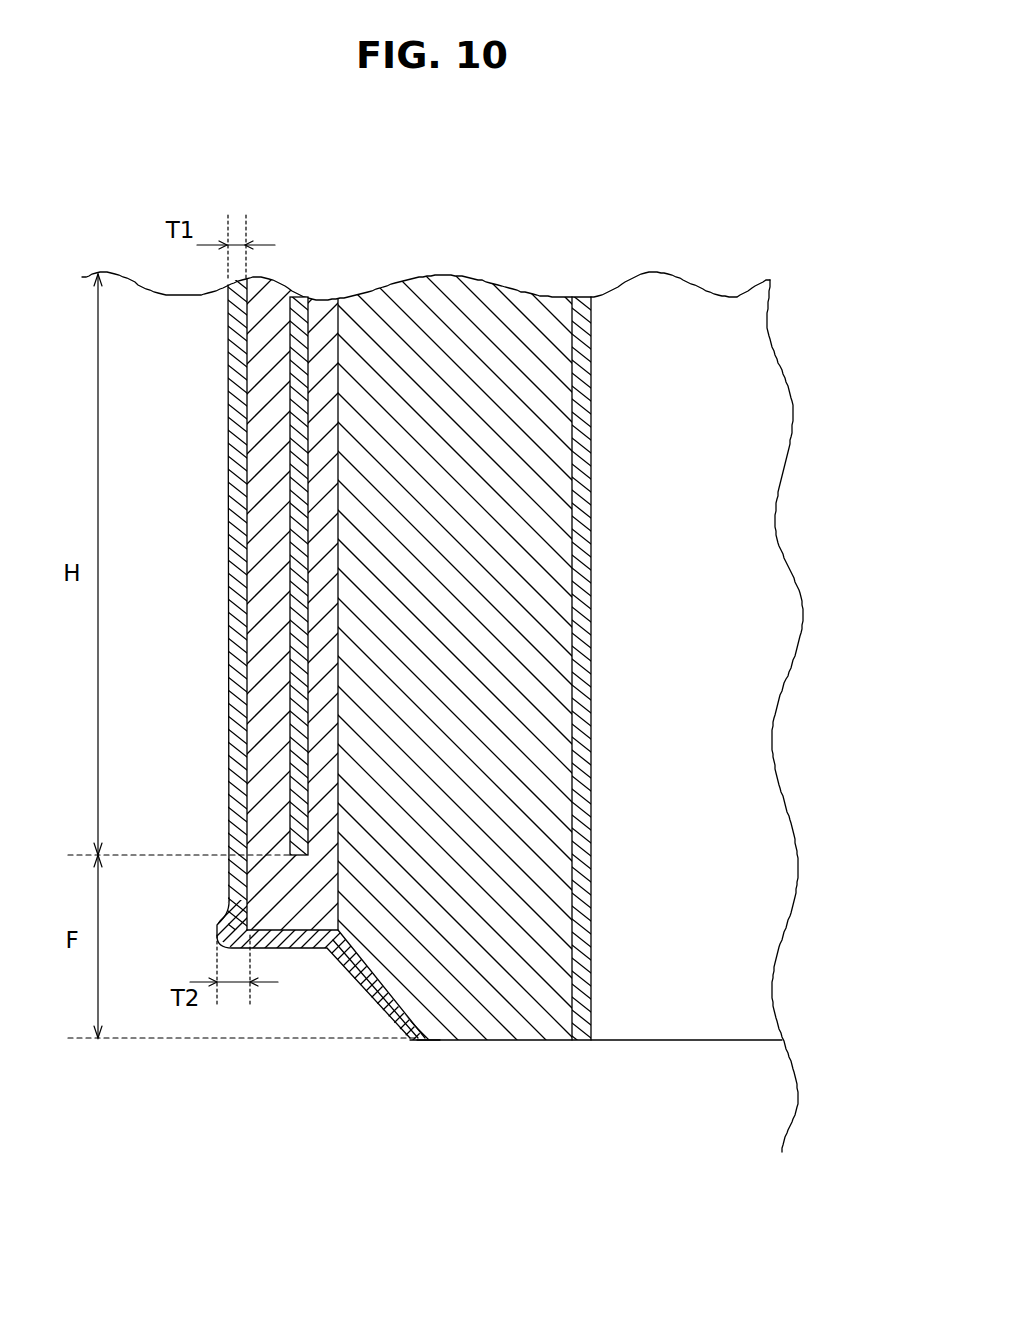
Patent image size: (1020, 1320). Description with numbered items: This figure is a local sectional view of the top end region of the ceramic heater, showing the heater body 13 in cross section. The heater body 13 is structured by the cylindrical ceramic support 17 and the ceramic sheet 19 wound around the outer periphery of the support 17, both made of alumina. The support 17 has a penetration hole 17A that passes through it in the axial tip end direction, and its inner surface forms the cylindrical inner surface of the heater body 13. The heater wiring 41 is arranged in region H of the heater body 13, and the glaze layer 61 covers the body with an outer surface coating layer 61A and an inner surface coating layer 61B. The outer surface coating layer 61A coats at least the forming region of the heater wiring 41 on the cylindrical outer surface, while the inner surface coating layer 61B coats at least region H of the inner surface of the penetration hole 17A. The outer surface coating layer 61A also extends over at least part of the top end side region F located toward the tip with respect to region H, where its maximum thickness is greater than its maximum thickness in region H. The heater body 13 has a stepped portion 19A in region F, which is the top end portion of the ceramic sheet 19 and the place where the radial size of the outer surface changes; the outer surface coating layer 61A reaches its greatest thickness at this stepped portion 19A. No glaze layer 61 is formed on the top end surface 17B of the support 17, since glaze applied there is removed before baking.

The heater body 13 is at (477, 208).
The support 17 is at (447, 345).
The penetration hole 17A is at (668, 350).
The top end surface 17B is at (500, 1042).
The ceramic sheet 19 is at (336, 304).
The stepped portion 19A is at (220, 927).
The heater wiring 41 is at (298, 293).
The glaze layer 61 is at (522, 721).
The outer surface coating layer 61A is at (418, 1042).
The inner surface coating layer 61B is at (583, 1042).